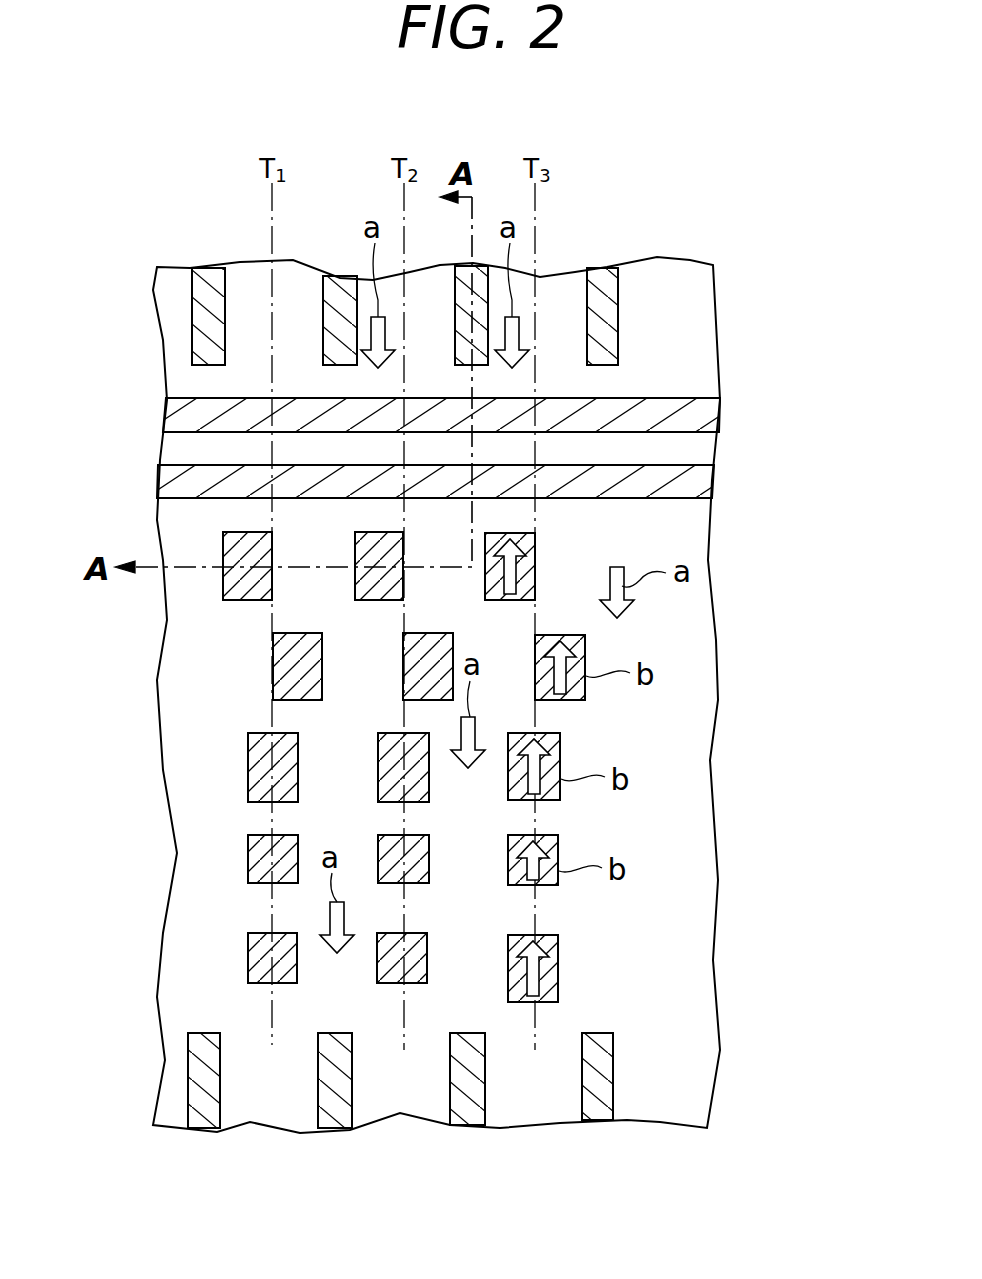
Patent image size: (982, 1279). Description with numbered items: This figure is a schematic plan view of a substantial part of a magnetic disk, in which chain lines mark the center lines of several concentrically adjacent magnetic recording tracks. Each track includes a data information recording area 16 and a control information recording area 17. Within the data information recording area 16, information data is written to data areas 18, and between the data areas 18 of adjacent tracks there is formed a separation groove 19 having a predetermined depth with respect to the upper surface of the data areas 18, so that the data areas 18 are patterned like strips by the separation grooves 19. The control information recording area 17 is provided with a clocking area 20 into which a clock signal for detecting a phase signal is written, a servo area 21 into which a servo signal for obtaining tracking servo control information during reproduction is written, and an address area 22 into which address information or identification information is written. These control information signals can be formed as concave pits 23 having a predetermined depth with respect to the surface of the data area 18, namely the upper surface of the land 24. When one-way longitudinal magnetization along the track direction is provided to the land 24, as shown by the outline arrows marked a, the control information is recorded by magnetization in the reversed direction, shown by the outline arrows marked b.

The data information recording area 16 is at (826, 268).
The control information recording area 17 is at (836, 403).
The data area 18 is at (300, 293).
The separation groove 19 is at (210, 285).
The clocking area 20 is at (750, 400).
The servo area 21 is at (753, 512).
The address area 22 is at (753, 835).
The concave pit 23 is at (672, 466).
The land 24 is at (177, 572).